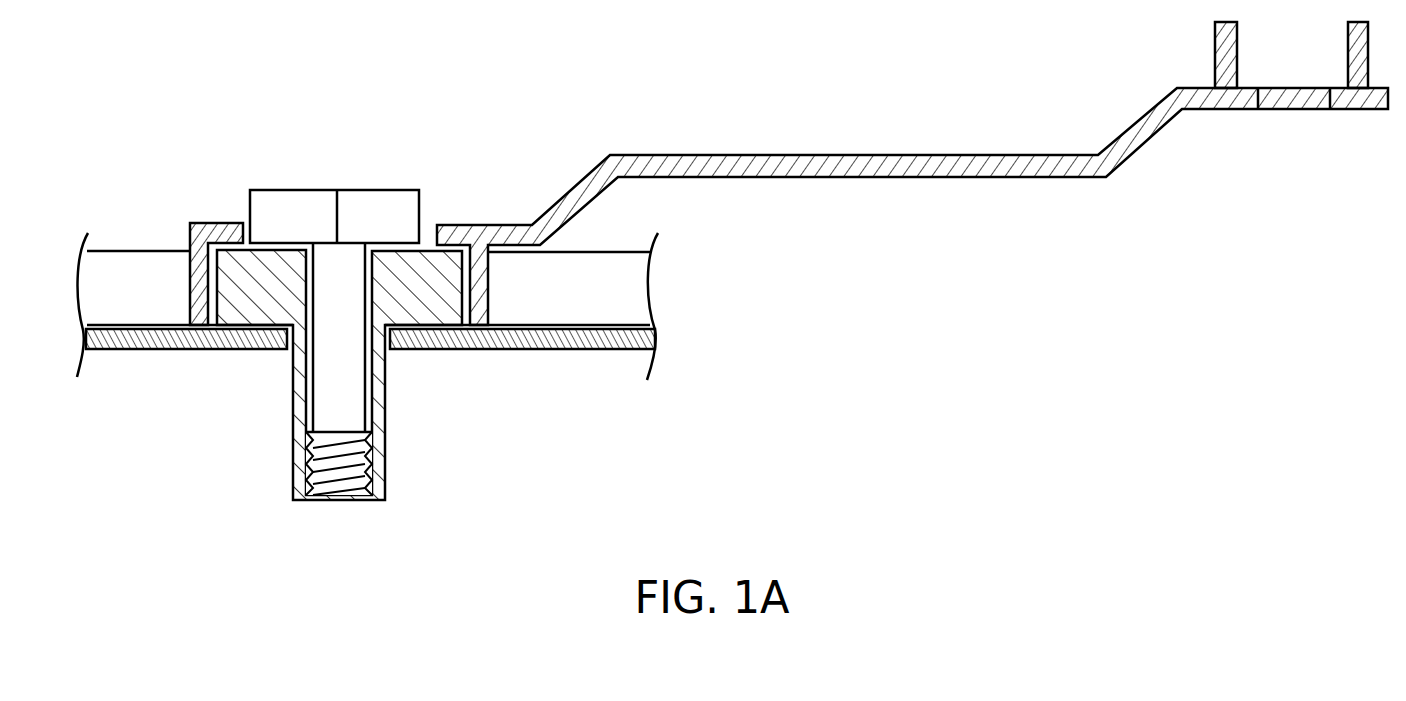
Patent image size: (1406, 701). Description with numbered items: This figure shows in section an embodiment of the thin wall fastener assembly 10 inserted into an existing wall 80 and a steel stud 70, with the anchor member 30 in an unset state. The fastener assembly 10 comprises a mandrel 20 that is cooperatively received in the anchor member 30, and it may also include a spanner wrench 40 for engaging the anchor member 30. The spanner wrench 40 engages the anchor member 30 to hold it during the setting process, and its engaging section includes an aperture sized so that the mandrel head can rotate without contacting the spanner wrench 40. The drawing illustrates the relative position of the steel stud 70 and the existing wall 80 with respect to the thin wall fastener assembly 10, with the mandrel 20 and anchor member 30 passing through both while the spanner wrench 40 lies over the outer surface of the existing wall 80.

The thin wall fastener assembly 10 is at (572, 56).
The mandrel 20 is at (377, 171).
The anchor member 30 is at (279, 403).
The spanner wrench 40 is at (903, 151).
The steel stud 70 is at (123, 340).
The existing wall 80 is at (134, 267).